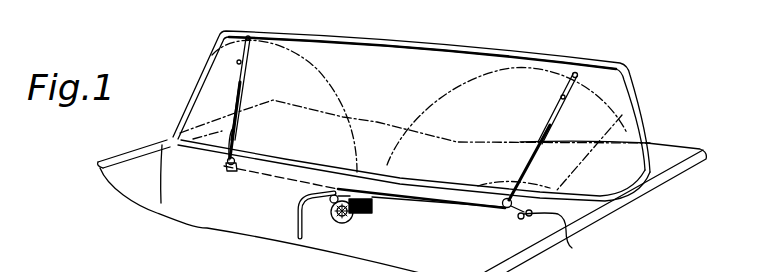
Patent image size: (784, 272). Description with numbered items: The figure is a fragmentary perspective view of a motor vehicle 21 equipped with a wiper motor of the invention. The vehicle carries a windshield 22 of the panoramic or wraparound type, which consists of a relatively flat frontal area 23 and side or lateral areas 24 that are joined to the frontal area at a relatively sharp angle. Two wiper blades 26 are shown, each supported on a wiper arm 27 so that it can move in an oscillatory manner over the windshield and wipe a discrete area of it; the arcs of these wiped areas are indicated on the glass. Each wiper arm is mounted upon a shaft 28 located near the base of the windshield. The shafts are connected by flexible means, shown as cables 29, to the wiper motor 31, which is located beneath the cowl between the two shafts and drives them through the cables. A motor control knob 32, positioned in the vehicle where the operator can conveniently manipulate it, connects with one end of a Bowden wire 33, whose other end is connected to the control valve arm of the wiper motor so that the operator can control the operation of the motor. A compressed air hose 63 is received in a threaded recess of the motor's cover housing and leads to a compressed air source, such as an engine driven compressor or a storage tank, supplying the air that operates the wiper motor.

The motor vehicle 21 is at (609, 201).
The windshield 22 is at (424, 42).
The frontal area 23 is at (401, 89).
The lateral areas 24 is at (635, 175).
The wiper blades 26 is at (238, 78).
The wiper arm 27 is at (236, 131).
The shaft 28 is at (221, 163).
The cables 29 is at (278, 183).
The wiper motor 31 is at (353, 224).
The motor control knob 32 is at (572, 248).
The Bowden wire 33 is at (417, 204).
The compressed air hose 63 is at (298, 214).